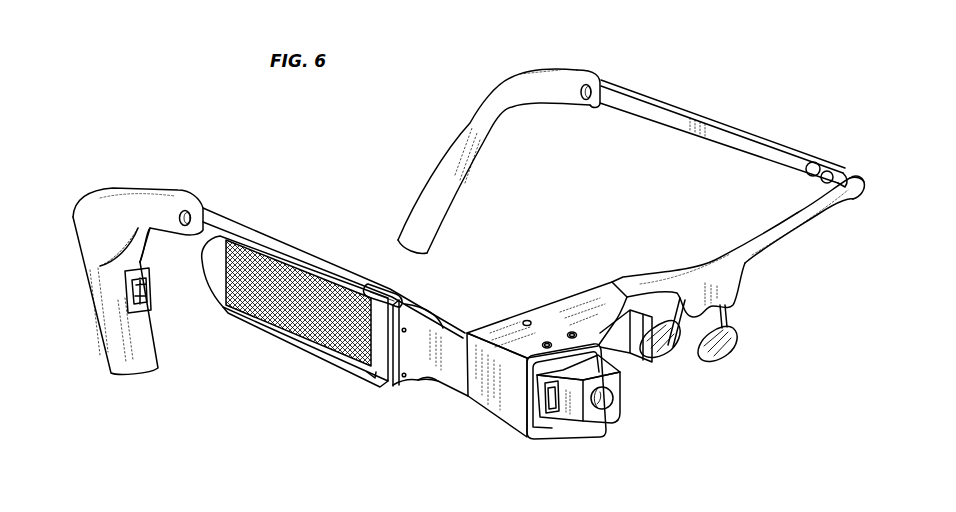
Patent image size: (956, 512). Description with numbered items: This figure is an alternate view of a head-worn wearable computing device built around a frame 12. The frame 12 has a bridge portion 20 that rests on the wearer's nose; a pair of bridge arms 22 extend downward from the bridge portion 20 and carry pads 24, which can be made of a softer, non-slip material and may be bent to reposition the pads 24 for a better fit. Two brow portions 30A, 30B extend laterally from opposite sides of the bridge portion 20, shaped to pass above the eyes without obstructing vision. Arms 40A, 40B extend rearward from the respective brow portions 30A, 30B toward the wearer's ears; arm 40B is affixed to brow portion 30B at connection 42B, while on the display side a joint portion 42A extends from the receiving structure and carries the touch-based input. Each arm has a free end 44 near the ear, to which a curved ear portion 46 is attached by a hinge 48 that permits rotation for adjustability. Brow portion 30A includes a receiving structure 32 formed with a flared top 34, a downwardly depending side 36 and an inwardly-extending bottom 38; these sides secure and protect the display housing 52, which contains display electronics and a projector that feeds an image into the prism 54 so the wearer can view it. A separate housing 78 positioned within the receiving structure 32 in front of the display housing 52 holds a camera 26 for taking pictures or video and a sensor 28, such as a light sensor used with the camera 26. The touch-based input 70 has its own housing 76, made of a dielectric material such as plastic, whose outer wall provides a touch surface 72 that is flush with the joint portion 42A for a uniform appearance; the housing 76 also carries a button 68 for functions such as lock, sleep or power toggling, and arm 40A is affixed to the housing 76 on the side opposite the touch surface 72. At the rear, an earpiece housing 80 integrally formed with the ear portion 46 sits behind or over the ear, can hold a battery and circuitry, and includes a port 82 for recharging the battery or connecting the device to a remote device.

The frame 12 is at (783, 291).
The bridge portion 20 is at (693, 360).
The bridge arms 22 is at (732, 320).
The pads 24 is at (726, 352).
The camera 26 is at (601, 410).
The sensor 28 is at (552, 395).
The brow portion 30A is at (680, 273).
The brow portion 30B is at (812, 224).
The receiving structure 32 is at (497, 458).
The flared top 34 is at (564, 323).
The downwardly depending side 36 is at (476, 406).
The inwardly-extending bottom 38 is at (543, 437).
The arm 40A is at (316, 253).
The arm 40B is at (731, 138).
The joint portion 42A is at (396, 388).
The right hinge 42B is at (858, 180).
The free ends 44 is at (158, 192).
The ear portions 46 is at (520, 108).
The hinge 48 is at (186, 210).
The housing 52 is at (635, 426).
The prism 54 is at (639, 362).
The button 68 is at (392, 292).
The touch-based input 70 is at (267, 340).
The touch surface 72 is at (318, 345).
The housing 76 is at (248, 236).
The housing 78 is at (577, 370).
The earpiece housing 80 is at (84, 283).
The port 82 is at (151, 292).